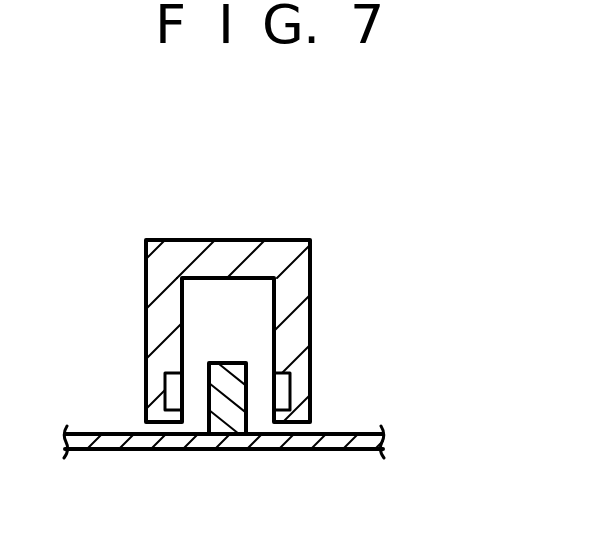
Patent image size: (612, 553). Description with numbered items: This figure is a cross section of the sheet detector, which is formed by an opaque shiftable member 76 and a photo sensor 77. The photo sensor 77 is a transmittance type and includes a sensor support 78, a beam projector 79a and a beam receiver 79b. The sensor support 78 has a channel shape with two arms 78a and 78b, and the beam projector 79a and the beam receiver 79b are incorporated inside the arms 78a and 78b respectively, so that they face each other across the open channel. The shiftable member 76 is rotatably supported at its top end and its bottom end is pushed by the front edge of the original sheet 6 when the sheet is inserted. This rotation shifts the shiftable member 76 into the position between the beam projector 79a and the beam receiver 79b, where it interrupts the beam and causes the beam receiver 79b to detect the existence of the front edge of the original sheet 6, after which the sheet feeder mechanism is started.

The photo sensor 77 is at (239, 226).
The sensor support 78 is at (310, 275).
The arm 78a is at (146, 332).
The arm 78b is at (310, 332).
The beam projector 79a is at (183, 376).
The beam receiver 79b is at (276, 389).
The shiftable member 76 is at (231, 425).
The original sheet 6 is at (328, 434).